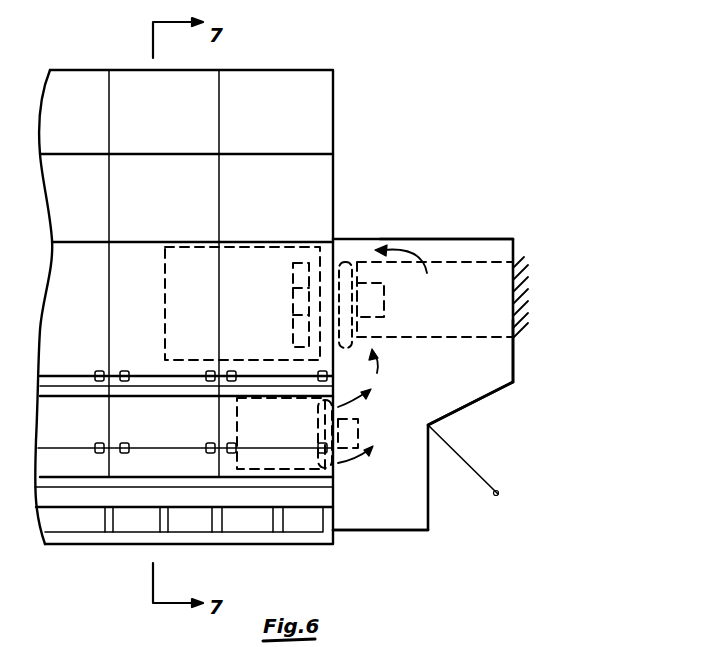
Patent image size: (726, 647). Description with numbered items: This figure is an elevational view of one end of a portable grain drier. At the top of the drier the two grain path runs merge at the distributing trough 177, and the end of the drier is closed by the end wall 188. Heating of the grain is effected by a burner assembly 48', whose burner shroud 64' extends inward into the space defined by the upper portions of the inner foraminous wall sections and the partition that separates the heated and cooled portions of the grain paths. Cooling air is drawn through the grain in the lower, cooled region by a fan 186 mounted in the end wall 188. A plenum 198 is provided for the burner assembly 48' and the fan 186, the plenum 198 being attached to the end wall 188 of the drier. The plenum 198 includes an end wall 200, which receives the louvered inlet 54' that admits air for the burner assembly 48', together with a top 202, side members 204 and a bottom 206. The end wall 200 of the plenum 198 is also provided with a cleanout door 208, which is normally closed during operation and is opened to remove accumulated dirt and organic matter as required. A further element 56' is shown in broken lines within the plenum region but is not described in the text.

The distributing trough 177 is at (315, 127).
The burner shroud 64' is at (238, 283).
The burner assembly 48' is at (374, 269).
The top 202 is at (440, 237).
The bracket plate 56' is at (449, 263).
The louvered inlet 54' is at (558, 297).
The side members 204 is at (506, 357).
The plenum 198 is at (485, 381).
The end wall 200 is at (514, 384).
The end wall 188 is at (335, 376).
The cleanout door 208 is at (462, 458).
The fan 186 is at (355, 473).
The bottom 206 is at (390, 532).